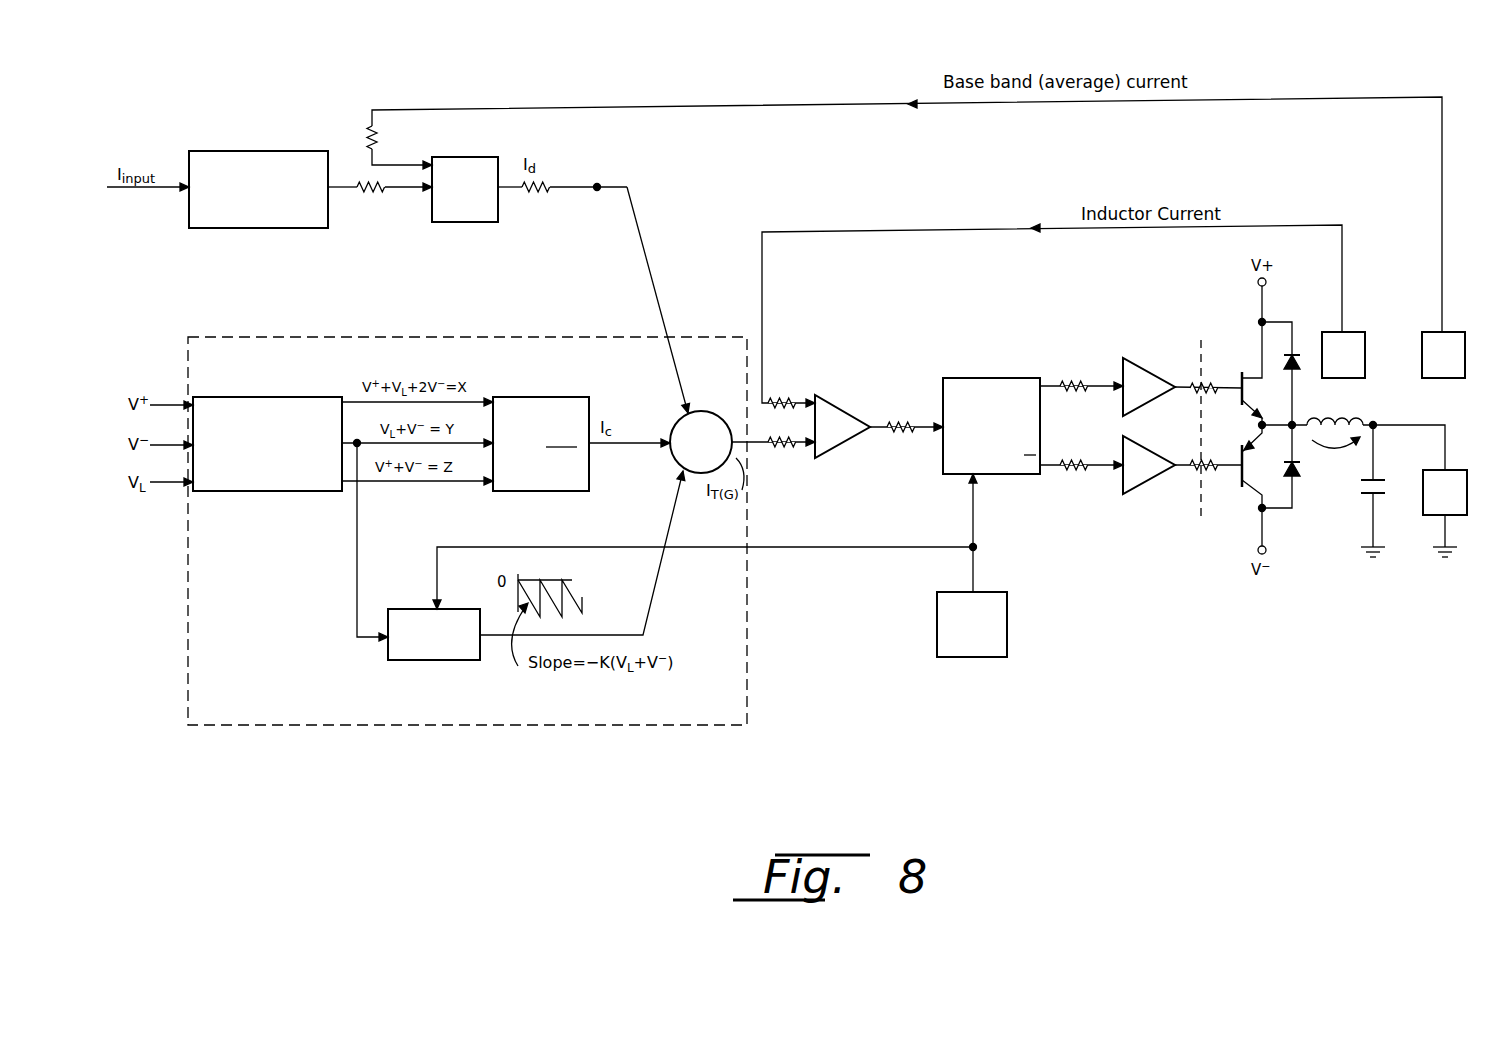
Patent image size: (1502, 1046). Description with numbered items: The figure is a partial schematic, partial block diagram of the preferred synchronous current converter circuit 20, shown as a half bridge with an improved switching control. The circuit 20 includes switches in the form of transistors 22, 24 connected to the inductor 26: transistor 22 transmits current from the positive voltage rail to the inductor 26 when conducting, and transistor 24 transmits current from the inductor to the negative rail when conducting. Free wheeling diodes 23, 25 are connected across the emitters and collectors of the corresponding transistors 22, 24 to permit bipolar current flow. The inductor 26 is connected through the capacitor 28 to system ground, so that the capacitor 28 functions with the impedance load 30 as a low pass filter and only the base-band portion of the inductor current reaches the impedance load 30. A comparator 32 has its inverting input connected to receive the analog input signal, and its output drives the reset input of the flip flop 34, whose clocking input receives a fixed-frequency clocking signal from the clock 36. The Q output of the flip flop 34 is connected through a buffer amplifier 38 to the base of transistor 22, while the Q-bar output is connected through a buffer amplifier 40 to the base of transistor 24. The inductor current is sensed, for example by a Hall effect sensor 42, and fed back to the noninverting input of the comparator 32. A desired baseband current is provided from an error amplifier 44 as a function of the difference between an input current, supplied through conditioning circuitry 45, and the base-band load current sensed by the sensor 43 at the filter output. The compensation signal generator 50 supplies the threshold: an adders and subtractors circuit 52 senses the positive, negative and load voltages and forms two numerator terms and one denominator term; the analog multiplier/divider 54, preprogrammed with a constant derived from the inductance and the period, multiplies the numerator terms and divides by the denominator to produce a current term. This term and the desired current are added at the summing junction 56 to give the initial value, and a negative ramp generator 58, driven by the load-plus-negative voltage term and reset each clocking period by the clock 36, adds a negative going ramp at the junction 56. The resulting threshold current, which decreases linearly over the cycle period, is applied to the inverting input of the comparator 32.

The circuit 20 is at (935, 695).
The transistor 22 is at (1248, 365).
The free wheeling diode 23 is at (1300, 358).
The transistor 24 is at (1250, 488).
The free wheeling diode 25 is at (1300, 466).
The inductor 26 is at (1335, 422).
The capacitor 28 is at (1362, 492).
The impedance load 30 is at (1458, 470).
The comparator 32 is at (858, 418).
The flip flop 34 is at (1012, 378).
The clock 36 is at (1008, 592).
The buffer amplifier 38 is at (1150, 372).
The buffer amplifier 40 is at (1150, 483).
The Hall effect sensor 42 is at (1355, 332).
The sensor 43 is at (1455, 332).
The error amplifier 44 is at (468, 157).
The conditioning circuitry 45 is at (288, 151).
The compensation signal generator 50 is at (188, 552).
The adders and subtractors circuit 52 is at (292, 397).
The analog multiplier/divider 54 is at (548, 397).
The summing junction 56 is at (670, 418).
The negative ramp generator 58 is at (412, 609).